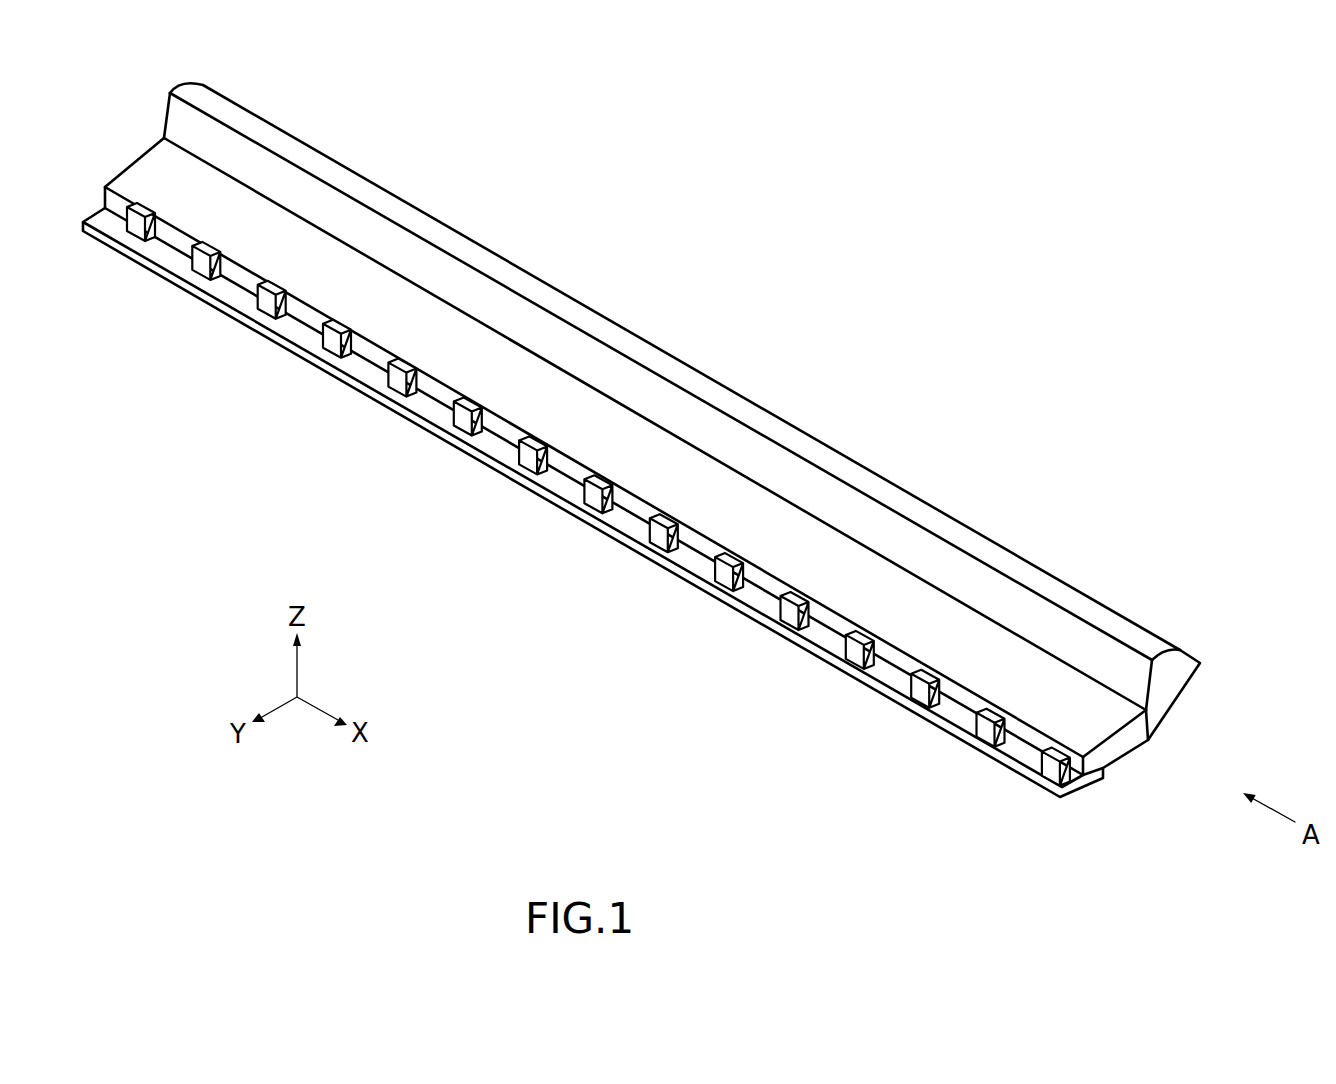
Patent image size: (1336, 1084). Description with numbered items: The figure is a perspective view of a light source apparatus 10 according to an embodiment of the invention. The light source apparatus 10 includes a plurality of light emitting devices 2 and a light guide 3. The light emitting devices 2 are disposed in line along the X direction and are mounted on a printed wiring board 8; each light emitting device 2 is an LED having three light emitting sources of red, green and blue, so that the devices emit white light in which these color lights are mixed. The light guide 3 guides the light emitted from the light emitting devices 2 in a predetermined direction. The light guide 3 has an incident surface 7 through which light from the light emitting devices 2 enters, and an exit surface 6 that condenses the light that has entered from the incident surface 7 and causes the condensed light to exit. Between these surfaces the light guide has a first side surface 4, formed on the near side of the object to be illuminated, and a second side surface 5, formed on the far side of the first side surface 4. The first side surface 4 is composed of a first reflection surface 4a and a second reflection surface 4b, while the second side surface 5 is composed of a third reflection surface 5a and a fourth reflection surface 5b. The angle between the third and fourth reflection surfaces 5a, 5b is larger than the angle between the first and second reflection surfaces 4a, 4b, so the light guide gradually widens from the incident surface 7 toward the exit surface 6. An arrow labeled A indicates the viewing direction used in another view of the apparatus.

The light source apparatus 10 is at (758, 238).
The light emitting devices 2 is at (137, 226).
The light guide 3 is at (386, 191).
The first side surface 4 is at (607, 258).
The first reflection surface 4a is at (623, 440).
The second reflection surface 4b is at (594, 360).
The second side surface 5 is at (1160, 803).
The third reflection surface 5a is at (1133, 757).
The fourth reflection surface 5b is at (1177, 707).
The exit surface 6 is at (1033, 580).
The incident surface 7 is at (500, 428).
The printed wiring board 8 is at (1048, 788).